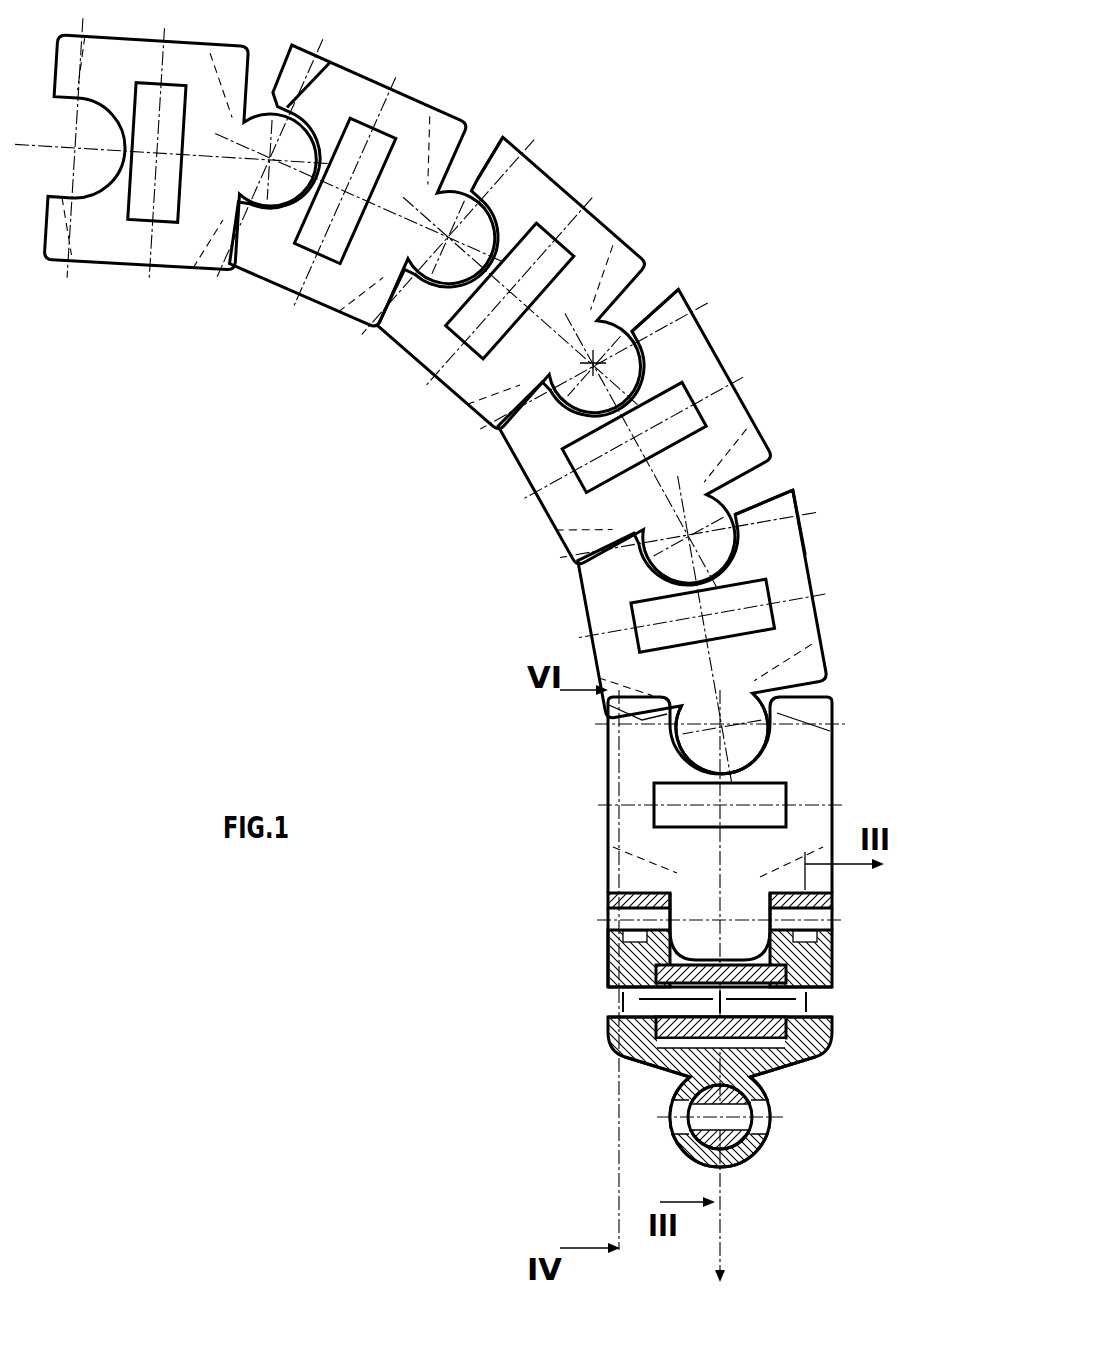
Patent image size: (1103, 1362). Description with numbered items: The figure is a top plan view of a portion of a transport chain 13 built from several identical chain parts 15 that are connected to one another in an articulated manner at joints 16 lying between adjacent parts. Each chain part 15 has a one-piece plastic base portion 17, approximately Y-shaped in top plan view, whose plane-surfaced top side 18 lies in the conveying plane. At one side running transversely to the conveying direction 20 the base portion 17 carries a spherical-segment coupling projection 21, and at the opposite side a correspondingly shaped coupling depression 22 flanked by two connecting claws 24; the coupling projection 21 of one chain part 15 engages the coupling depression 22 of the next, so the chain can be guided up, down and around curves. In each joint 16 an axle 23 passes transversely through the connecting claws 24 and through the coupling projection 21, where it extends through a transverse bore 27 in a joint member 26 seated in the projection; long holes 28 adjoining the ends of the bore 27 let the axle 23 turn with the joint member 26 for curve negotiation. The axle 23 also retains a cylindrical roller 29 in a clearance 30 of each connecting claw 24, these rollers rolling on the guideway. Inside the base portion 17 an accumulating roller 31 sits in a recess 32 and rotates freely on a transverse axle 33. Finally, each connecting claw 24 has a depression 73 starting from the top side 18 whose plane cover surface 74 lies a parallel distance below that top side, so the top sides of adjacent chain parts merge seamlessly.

The transport chain 13 is at (433, 404).
The chain part 15 is at (428, 66).
The joint 16 is at (600, 330).
The base portion 17 is at (535, 190).
The top side 18 is at (591, 358).
The conveying direction 20 is at (735, 1228).
The coupling projection 21 is at (750, 700).
The coupling depression 22 is at (668, 963).
The axle 23 is at (607, 912).
The connecting claw 24 is at (607, 900).
The joint member 26 is at (673, 1148).
The bore 27 is at (687, 1118).
The long hole 28 is at (670, 1100).
The roller 29 is at (637, 893).
The clearance 30 is at (607, 934).
The accumulating roller 31 is at (775, 795).
The recess 32 is at (657, 1058).
The axle 33 is at (623, 996).
The depression 73 is at (782, 484).
The cover surface 74 is at (792, 494).